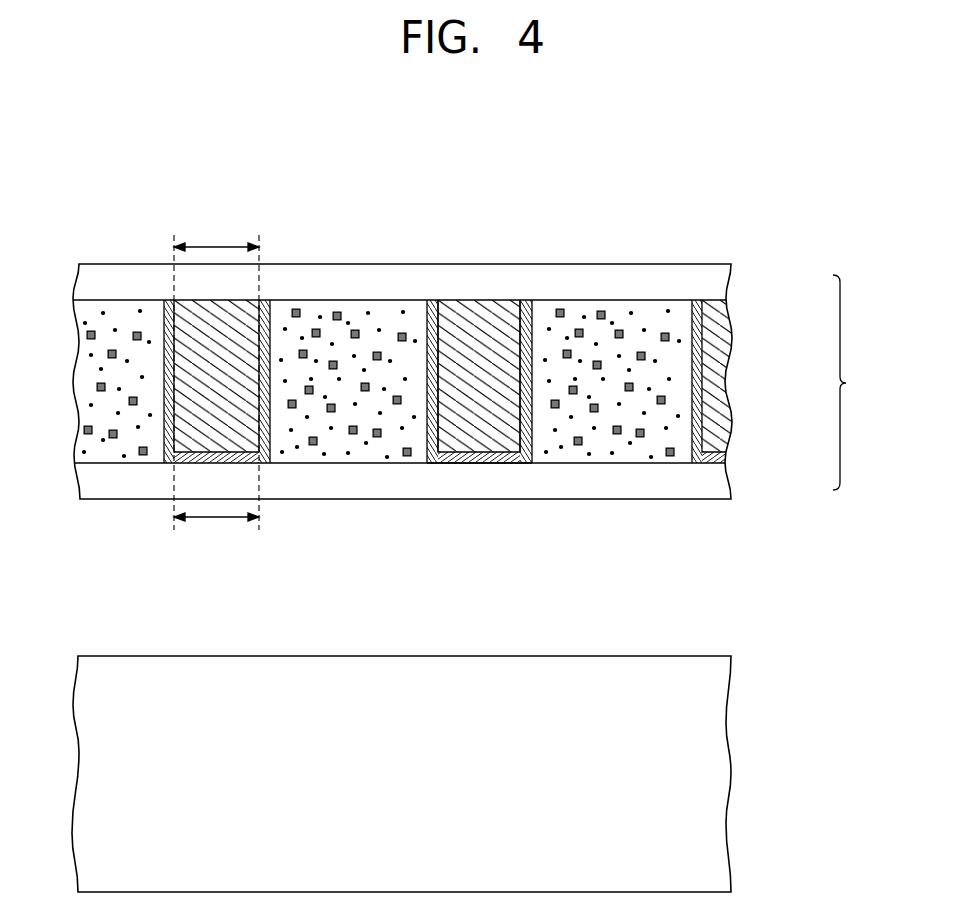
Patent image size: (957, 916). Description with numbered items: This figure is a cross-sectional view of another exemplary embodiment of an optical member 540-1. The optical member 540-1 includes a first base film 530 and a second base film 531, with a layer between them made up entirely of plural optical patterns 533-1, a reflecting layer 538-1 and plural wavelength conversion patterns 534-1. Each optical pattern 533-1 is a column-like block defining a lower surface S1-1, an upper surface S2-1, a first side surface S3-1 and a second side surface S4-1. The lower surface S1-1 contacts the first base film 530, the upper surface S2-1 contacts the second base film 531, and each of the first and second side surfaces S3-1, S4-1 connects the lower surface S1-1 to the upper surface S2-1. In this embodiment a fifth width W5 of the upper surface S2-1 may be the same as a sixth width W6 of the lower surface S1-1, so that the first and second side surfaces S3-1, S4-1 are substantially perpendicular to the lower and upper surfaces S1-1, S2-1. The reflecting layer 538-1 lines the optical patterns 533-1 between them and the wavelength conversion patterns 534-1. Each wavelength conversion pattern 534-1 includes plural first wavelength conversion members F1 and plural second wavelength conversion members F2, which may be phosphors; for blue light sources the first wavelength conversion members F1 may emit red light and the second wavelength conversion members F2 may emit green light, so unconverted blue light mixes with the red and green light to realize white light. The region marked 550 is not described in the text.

The second base film 531 is at (721, 285).
The first base film 530 is at (720, 484).
The optical pattern 533-1 is at (458, 314).
The wavelength conversion pattern 534-1 is at (381, 314).
The first wavelength conversion member F1 is at (601, 311).
The second wavelength conversion member F2 is at (632, 312).
The reflecting layer 538-1 is at (723, 457).
The optical member 540-1 is at (870, 382).
The lower surface S1-1 is at (477, 458).
The upper surface S2-1 is at (476, 340).
The first side surface S3-1 is at (438, 338).
The second side surface S4-1 is at (521, 338).
The fifth width W5 is at (216, 236).
The sixth width W6 is at (216, 527).
The semiconductor substrate 550 is at (718, 773).